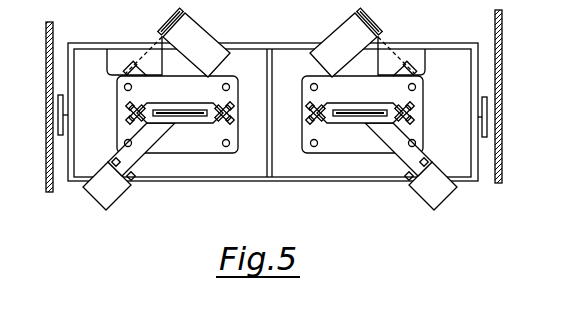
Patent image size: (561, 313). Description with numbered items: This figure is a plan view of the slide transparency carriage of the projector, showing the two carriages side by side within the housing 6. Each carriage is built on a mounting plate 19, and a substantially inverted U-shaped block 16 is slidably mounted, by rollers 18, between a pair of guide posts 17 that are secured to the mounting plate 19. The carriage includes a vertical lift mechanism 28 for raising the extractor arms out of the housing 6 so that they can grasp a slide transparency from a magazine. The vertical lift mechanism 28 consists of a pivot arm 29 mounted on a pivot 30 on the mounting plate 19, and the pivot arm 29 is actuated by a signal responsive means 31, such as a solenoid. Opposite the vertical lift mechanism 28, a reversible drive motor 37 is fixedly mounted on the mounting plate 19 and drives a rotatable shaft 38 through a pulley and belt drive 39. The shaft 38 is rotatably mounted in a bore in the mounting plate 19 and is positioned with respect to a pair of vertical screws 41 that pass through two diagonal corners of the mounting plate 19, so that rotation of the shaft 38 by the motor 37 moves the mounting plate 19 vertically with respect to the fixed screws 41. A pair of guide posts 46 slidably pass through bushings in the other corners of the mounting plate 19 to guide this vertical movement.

The housing 6 is at (47, 100).
The U-shaped block 16 is at (186, 112).
The guide posts 17 is at (128, 113).
The rollers 18 is at (131, 104).
The mounting plate 19 is at (205, 153).
The vertical lift mechanism 28 is at (86, 203).
The pivot arm 29 is at (150, 158).
The pivot 30 is at (133, 182).
The signal responsive means 31 is at (111, 200).
The reversible drive motor 37 is at (212, 33).
The rotatable shaft 38 is at (122, 72).
The pulley and belt drive 39 is at (157, 37).
The vertical screws 41 is at (123, 84).
The guide posts 46 is at (230, 83).